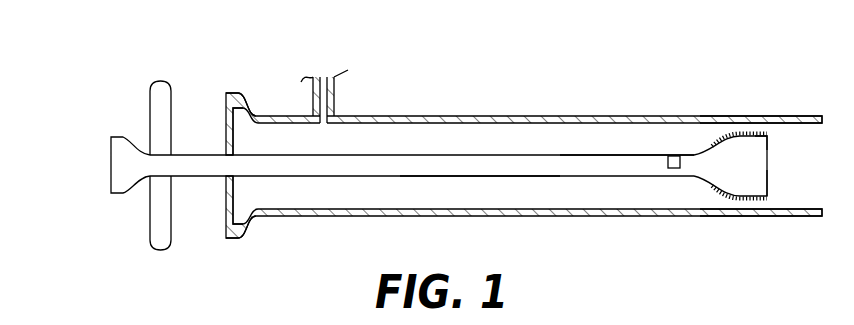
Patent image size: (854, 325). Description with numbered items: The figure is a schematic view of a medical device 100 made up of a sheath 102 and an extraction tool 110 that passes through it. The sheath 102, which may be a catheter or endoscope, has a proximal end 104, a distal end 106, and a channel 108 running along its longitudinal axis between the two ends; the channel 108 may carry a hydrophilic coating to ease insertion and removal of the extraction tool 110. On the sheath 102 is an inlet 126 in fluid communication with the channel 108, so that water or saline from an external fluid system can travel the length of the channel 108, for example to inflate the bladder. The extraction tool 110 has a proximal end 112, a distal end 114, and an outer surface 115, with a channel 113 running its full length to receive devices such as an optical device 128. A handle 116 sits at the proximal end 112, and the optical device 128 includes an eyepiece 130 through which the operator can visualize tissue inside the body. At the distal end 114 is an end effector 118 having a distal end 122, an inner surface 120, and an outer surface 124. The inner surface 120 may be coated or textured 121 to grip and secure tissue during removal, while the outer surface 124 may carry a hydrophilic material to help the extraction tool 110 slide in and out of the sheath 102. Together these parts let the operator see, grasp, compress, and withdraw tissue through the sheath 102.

The medical device 100 is at (482, 38).
The sheath 102 is at (513, 113).
The proximal end 104 is at (240, 87).
The distal end 106 is at (805, 103).
The channel 108 is at (362, 190).
The extraction tool 110 is at (555, 180).
The proximal end 112 is at (202, 217).
The channel 113 is at (628, 160).
The distal end 114 is at (692, 180).
The outer surface 115 is at (478, 180).
The handle 116 is at (157, 256).
The end effector 118 is at (753, 200).
The inner surface 120 is at (708, 176).
The textured surface 121 is at (760, 182).
The distal end 122 is at (772, 136).
The outer surface 124 is at (730, 132).
The inlet 126 is at (324, 70).
The optical device 128 is at (672, 156).
The eyepiece 130 is at (108, 170).